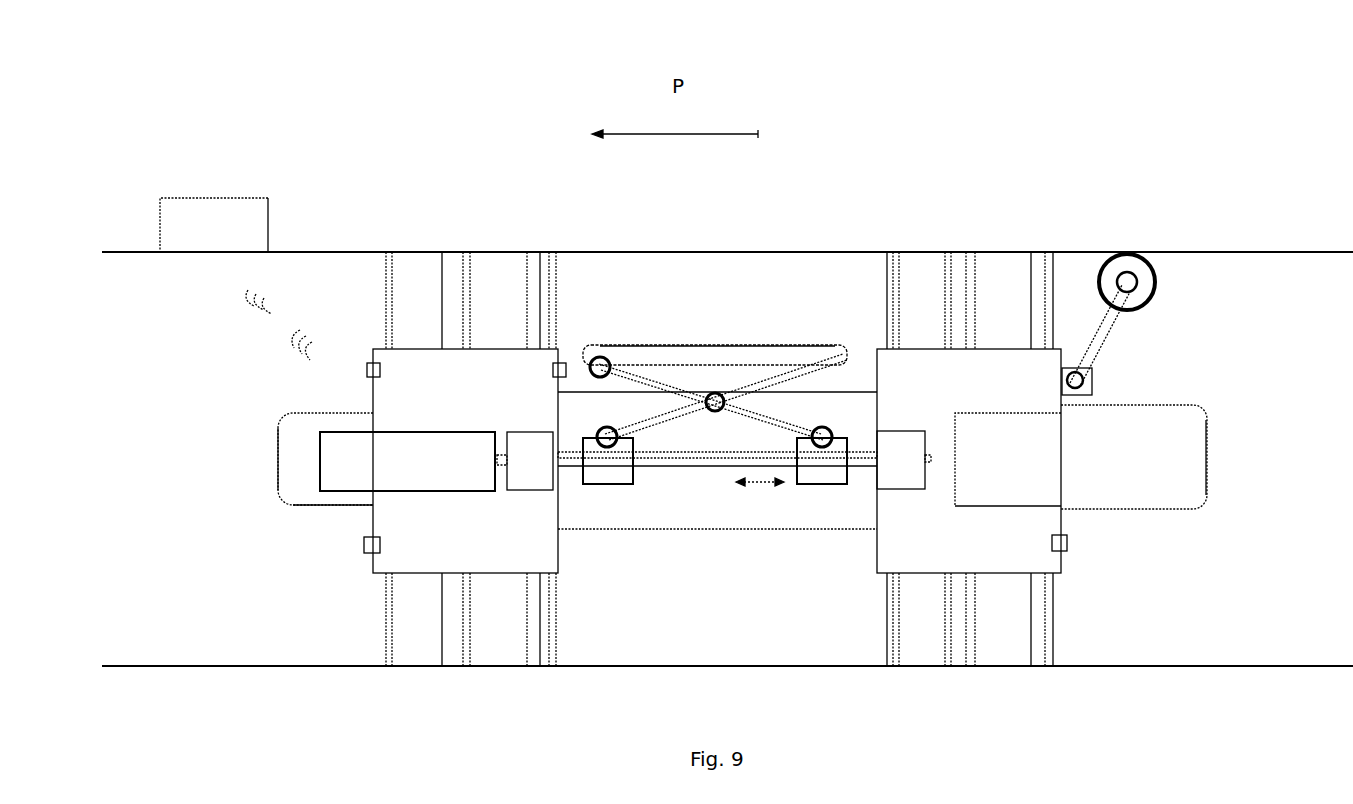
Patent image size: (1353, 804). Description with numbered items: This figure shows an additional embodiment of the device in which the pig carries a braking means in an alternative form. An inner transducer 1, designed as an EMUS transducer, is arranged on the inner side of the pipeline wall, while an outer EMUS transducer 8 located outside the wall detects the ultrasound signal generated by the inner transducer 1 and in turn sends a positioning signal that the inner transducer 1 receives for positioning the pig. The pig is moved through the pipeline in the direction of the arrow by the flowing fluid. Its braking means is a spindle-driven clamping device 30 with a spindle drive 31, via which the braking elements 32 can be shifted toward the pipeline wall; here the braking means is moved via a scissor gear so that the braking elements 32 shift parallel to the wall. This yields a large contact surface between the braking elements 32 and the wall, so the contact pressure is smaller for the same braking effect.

The inner transducer 1 is at (349, 464).
The outer EMUS transducer 8 is at (222, 210).
The spindle-driven clamping device 30 is at (802, 288).
The spindle drive 31 is at (743, 448).
The braking elements 32 is at (672, 345).